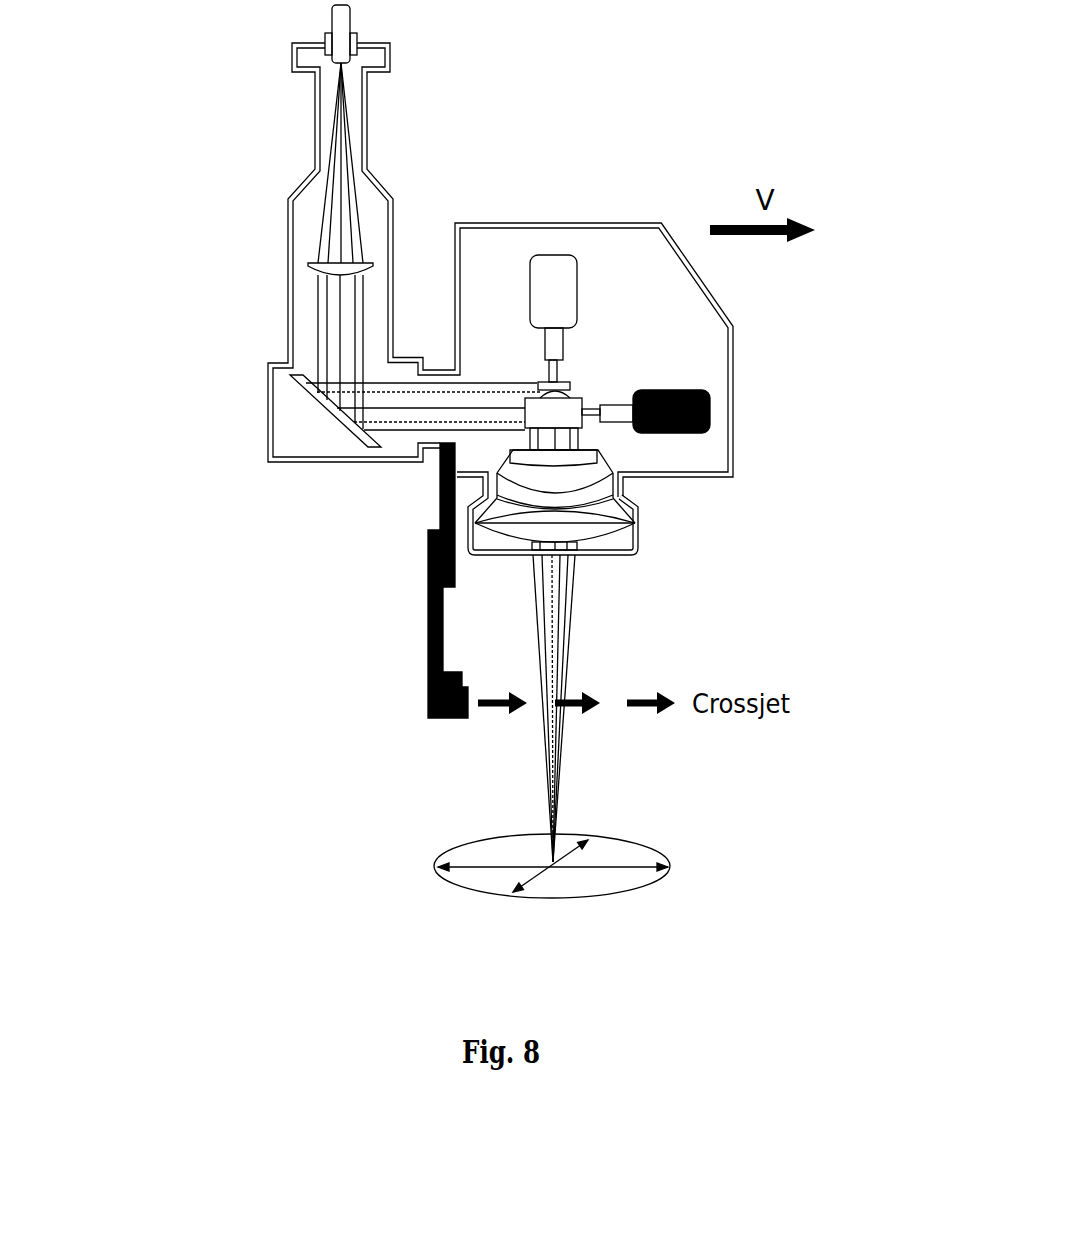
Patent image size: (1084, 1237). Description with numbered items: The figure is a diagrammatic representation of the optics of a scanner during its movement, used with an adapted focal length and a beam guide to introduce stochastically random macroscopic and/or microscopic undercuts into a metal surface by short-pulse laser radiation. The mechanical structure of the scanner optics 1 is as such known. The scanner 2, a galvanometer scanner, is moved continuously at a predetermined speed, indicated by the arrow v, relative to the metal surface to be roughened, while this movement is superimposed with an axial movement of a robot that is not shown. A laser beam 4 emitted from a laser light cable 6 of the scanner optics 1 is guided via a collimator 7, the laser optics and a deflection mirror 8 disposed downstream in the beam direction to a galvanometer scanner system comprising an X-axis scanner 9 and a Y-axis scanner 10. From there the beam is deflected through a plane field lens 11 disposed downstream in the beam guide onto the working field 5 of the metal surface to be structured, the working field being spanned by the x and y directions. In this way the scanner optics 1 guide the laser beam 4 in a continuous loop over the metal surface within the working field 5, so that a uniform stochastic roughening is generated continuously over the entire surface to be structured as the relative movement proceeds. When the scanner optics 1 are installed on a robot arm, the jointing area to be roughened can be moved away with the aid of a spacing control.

The scanner optics 1 is at (290, 155).
The scanner 2 is at (572, 385).
The laser beam 4 is at (342, 182).
The working field of the scanner optics 5 is at (517, 848).
The laser light cable 6 is at (357, 33).
The collimator 7 is at (310, 265).
The deflection mirror 8 is at (332, 400).
The X-axis scanner 9 is at (551, 306).
The Y-axis scanner 10 is at (697, 413).
The plane field lens 11 is at (603, 513).